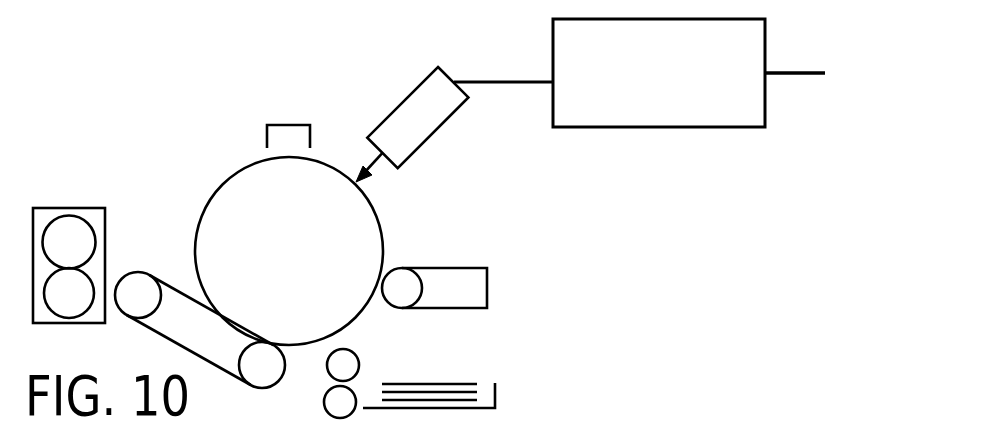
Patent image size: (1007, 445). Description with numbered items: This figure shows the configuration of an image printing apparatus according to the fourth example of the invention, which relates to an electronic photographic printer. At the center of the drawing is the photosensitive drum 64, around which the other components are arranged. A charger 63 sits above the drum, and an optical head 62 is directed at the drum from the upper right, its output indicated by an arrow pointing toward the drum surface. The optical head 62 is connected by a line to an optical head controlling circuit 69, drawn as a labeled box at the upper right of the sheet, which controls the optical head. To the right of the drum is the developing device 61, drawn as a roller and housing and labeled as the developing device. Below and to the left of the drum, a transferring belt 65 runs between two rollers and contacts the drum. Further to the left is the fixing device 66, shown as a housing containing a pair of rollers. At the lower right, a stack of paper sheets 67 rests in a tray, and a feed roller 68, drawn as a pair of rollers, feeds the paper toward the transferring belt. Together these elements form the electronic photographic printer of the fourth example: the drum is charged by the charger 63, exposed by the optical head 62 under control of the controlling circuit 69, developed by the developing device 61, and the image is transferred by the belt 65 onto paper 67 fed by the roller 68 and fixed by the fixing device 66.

The developing device 61 is at (432, 268).
The optical head 62 is at (437, 135).
The charger 63 is at (292, 125).
The photosensitive drum 64 is at (221, 183).
The transferring belt 65 is at (171, 342).
The fixing device 66 is at (72, 208).
The paper sheet 67 is at (445, 384).
The feed roller 68 is at (360, 359).
The optical head controlling circuit 69 is at (687, 19).